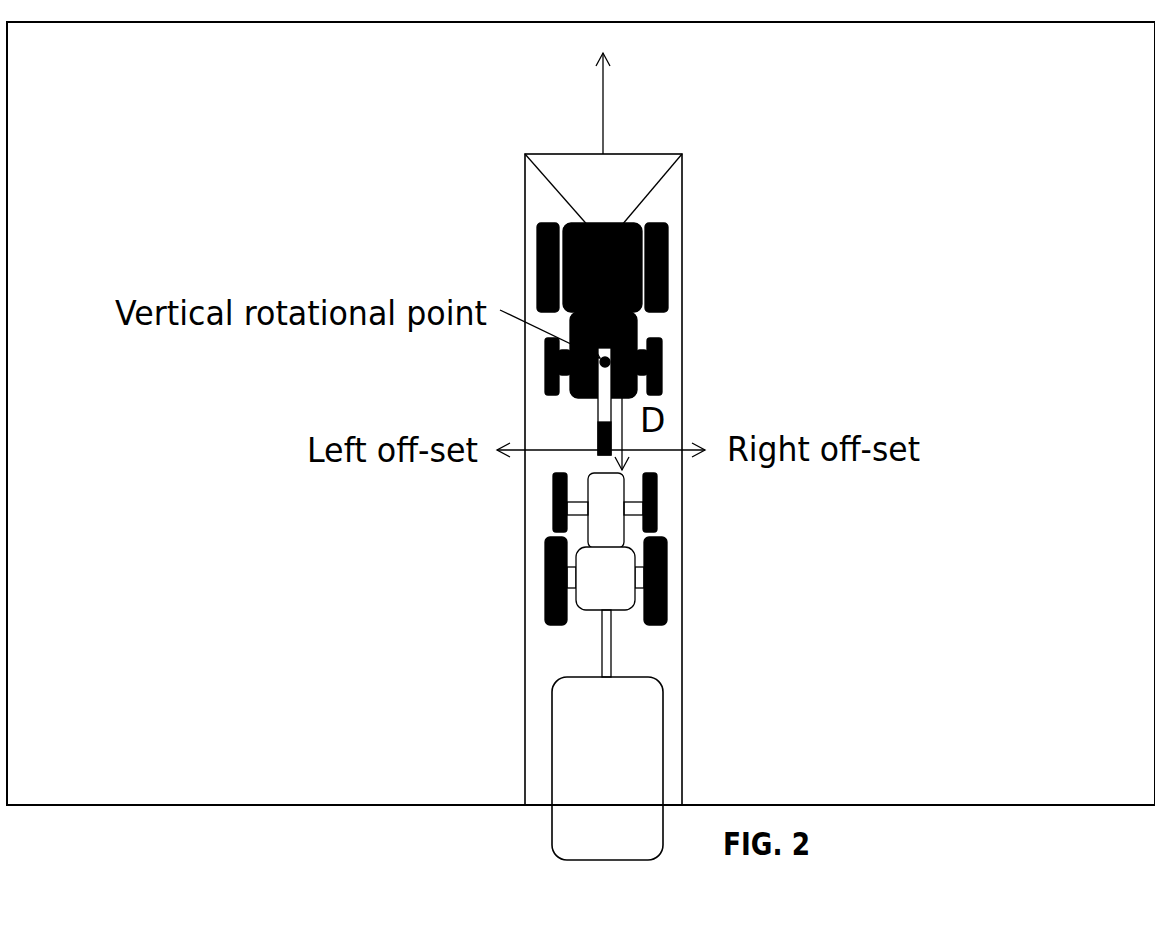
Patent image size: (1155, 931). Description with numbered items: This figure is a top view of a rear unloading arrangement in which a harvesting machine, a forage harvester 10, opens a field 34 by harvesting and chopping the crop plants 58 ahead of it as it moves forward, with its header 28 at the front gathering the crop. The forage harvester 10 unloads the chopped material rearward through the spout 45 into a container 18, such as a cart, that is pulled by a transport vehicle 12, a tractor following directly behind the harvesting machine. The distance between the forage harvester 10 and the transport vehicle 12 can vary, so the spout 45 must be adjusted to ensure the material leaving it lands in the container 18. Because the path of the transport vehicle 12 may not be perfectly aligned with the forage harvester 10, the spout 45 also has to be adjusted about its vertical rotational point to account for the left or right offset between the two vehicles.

The crop plants 58 is at (563, 129).
The header 28 is at (615, 190).
The harvesting machine 10 is at (625, 262).
The spout 45 is at (575, 423).
The transport vehicle 12 is at (615, 570).
The container 18 is at (623, 736).
The field 34 is at (581, 413).